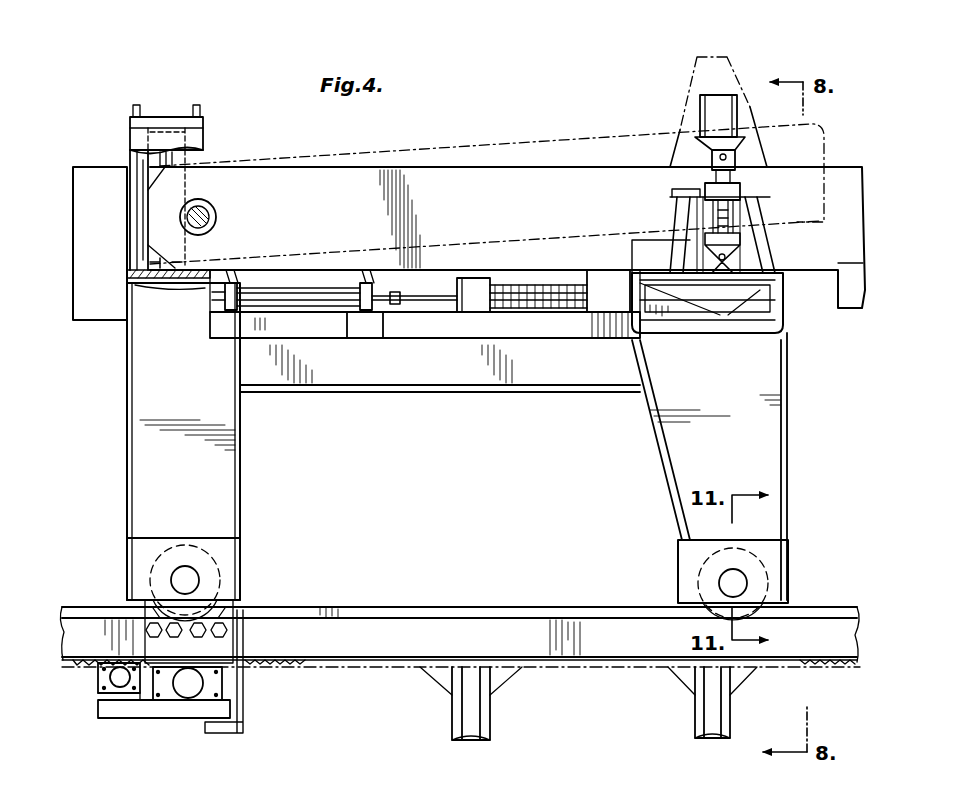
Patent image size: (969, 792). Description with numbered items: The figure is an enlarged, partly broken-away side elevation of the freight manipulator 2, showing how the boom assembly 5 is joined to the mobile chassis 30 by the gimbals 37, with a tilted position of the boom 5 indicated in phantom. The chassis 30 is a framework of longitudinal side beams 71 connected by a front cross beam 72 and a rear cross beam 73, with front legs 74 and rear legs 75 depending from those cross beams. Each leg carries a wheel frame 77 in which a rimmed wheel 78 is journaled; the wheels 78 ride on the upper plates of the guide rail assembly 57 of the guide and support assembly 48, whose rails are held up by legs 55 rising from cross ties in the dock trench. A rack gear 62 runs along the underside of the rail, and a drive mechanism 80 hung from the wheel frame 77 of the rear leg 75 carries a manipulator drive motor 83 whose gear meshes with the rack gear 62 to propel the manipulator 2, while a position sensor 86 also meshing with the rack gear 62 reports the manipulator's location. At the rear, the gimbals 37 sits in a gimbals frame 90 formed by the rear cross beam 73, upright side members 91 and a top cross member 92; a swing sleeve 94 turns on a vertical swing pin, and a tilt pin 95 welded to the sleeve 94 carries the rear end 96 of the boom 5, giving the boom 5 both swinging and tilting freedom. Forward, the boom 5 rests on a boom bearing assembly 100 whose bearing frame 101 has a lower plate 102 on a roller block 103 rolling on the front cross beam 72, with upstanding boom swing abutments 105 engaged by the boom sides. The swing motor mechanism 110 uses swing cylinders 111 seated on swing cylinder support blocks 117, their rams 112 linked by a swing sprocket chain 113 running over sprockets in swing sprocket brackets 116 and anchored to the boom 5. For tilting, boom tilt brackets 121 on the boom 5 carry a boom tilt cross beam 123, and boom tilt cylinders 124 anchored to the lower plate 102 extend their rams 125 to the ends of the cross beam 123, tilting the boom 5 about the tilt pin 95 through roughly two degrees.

The freight manipulator 2 is at (272, 115).
The boom assembly 5 is at (483, 165).
The mobile chassis 30 is at (125, 380).
The gimbals 37 is at (170, 299).
The guide and support assembly 48 is at (471, 607).
The legs 55 is at (480, 730).
The guide rail assembly 57 is at (405, 643).
The rack gear 62 is at (73, 663).
The longitudinal side beams 71 is at (438, 385).
The front cross beam 72 is at (784, 337).
The rear cross beam 73 is at (137, 270).
The front legs 74 is at (672, 462).
The rear legs 75 is at (225, 470).
The wheel frame 77 is at (232, 550).
The rimmed wheel 78 is at (188, 607).
The drive mechanism 80 is at (172, 695).
The manipulator drive motor 83 is at (188, 700).
The position sensor 86 is at (103, 680).
The gimbals frame 90 is at (130, 128).
The side members 91 is at (137, 175).
The top cross member 92 is at (137, 104).
The swing sleeve 94 is at (160, 158).
The tilt pin 95 is at (212, 208).
The rear end of the boom 96 is at (158, 216).
The boom bearing assembly 100 is at (698, 312).
The bearing frame 101 is at (676, 197).
The lower plate 102 is at (688, 273).
The roller block 103 is at (730, 312).
The boom swing abutments 105 is at (762, 243).
The swing motor mechanism 110 is at (482, 314).
The swing cylinders 111 is at (275, 305).
The rams 112 is at (430, 300).
The swing sprocket chain 113 is at (548, 310).
The swing sprocket brackets 116 is at (613, 315).
The swing cylinder support blocks 117 is at (375, 330).
The boom tilt brackets 121 is at (688, 154).
The boom tilt cross beam 123 is at (712, 100).
The boom tilt cylinders 124 is at (722, 216).
The rams 125 is at (735, 170).